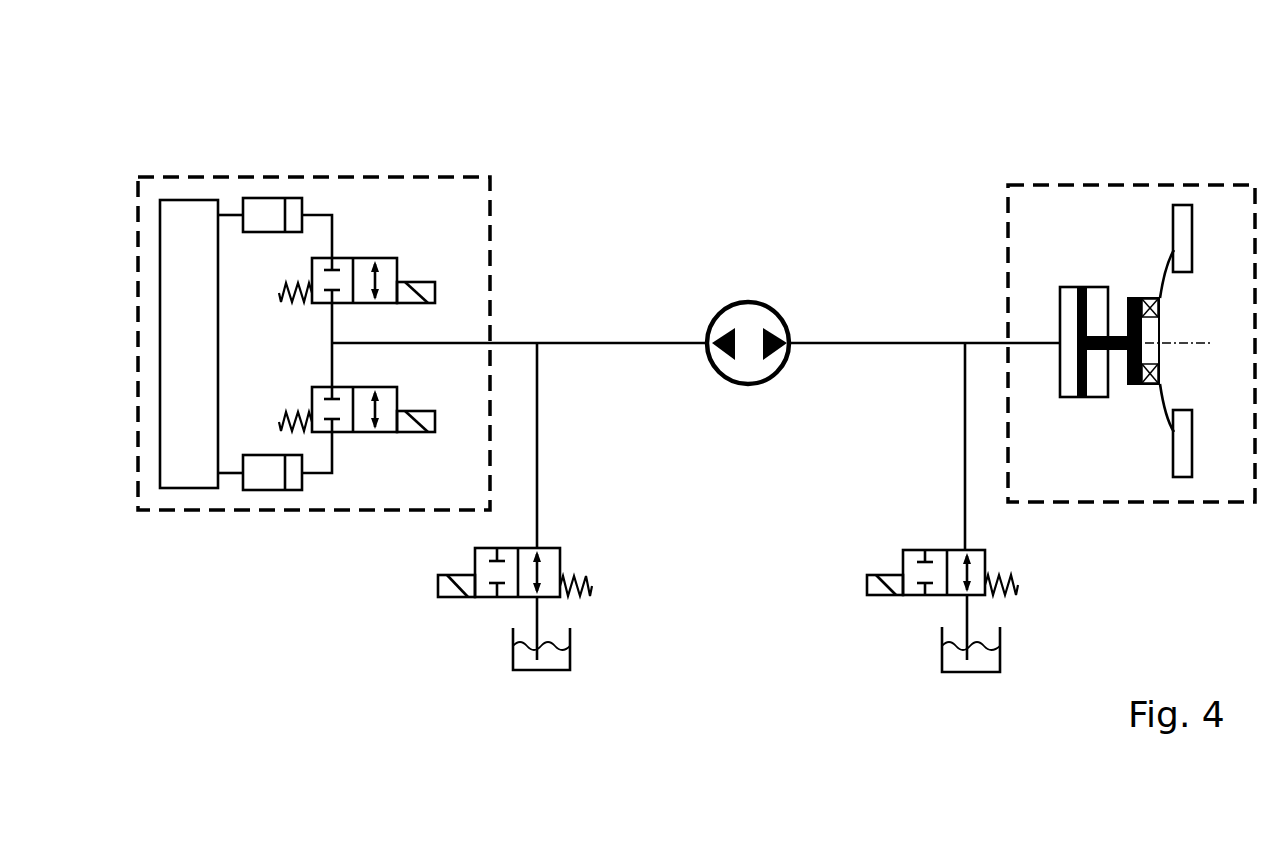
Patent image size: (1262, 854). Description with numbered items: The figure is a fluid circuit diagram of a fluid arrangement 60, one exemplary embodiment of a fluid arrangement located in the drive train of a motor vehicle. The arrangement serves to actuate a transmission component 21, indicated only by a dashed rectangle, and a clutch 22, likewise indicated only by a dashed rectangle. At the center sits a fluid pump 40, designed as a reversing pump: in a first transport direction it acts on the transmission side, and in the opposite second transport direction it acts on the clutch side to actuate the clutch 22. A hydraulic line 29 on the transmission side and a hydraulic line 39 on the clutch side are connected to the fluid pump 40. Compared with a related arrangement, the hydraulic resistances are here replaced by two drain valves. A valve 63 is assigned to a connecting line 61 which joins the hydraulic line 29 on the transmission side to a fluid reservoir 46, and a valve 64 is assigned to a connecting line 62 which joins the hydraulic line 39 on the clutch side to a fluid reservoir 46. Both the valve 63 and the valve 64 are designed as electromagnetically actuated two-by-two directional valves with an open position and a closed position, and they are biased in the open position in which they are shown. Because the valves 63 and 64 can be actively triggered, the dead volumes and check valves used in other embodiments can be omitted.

The fluid arrangement 60 is at (1142, 70).
The transmission component 21 is at (316, 324).
The clutch 22 is at (1133, 326).
The hydraulic line on the transmission side 29 is at (598, 340).
The hydraulic line on the clutch side 39 is at (888, 342).
The fluid pump 40 is at (745, 302).
The connecting line 61 is at (542, 482).
The connecting line 62 is at (963, 433).
The valve 63 is at (562, 557).
The valve 64 is at (903, 552).
The fluid reservoir 46 is at (548, 670).